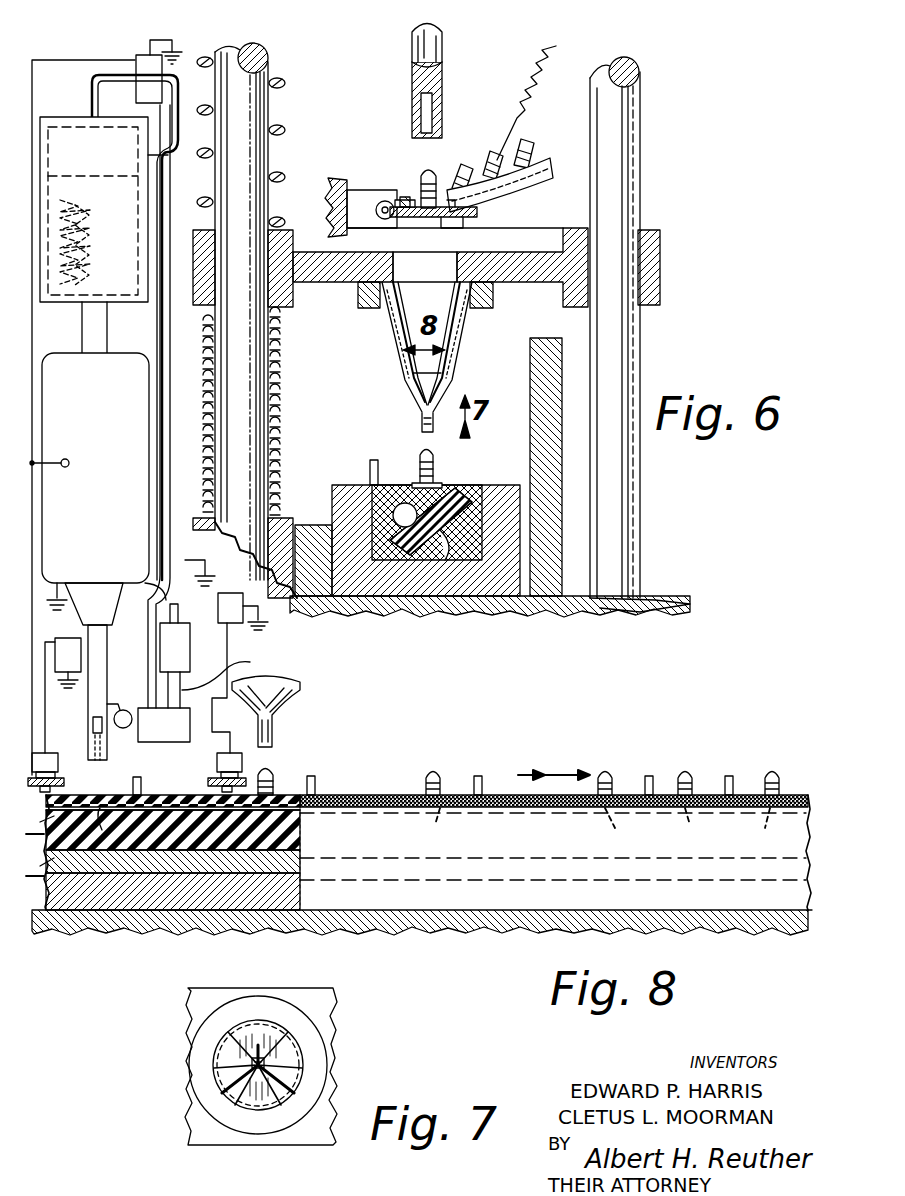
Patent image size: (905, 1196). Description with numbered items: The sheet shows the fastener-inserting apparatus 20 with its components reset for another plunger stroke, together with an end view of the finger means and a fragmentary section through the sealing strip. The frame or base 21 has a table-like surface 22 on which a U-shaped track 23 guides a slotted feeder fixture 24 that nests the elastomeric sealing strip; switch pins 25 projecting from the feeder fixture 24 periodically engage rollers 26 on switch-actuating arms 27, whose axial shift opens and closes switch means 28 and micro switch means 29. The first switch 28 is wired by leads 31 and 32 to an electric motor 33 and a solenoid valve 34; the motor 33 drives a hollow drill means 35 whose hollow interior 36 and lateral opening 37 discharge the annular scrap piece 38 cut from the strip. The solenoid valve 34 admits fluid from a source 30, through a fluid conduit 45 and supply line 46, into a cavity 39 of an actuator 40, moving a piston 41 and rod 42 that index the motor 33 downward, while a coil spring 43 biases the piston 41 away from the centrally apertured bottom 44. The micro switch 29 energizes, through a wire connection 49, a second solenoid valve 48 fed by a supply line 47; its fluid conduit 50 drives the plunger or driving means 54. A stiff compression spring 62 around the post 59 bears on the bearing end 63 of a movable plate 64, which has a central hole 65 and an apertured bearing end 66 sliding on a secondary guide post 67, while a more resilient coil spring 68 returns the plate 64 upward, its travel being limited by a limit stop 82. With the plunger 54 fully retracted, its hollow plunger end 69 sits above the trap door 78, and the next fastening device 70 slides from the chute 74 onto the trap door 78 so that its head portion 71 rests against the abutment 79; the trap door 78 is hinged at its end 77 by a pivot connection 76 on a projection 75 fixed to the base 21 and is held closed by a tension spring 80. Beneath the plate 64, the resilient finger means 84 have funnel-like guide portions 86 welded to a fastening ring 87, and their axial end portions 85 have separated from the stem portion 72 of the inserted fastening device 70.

In FIG. 6, the apparatus 20 is at (612, 338).
In FIG. 8, the apparatus 20 is at (760, 931).
In FIG. 6, the frame or base 21 is at (655, 604).
In FIG. 8, the frame or base 21 is at (700, 931).
In FIG. 6, the table-like surface 22 is at (315, 560).
In FIG. 6, the U-shaped track 23 is at (340, 546).
In FIG. 8, the U-shaped track 23 is at (262, 905).
In FIG. 6, the feeder fixture 24 is at (478, 494).
In FIG. 8, the feeder fixture 24 is at (296, 864).
In FIG. 6, the switch pins 25 is at (372, 484).
In FIG. 8, the switch pins 25 is at (316, 779).
In FIG. 6, the rollers 26 is at (62, 784).
In FIG. 6, the switch-actuating arms 27 is at (58, 778).
In FIG. 6, the switch means 28 is at (48, 754).
In FIG. 6, the micro switch means 29 is at (225, 770).
In FIG. 6, the source of fluid under pressure 30 is at (174, 745).
In FIG. 6, the lead or wire 31 is at (34, 515).
In FIG. 6, the lead or wire 32 is at (33, 82).
In FIG. 6, the electric motor 33 is at (148, 408).
In FIG. 6, the solenoid valve 34 is at (142, 54).
In FIG. 6, the drill means 35 is at (112, 640).
In FIG. 6, the hollow interior 36 is at (102, 750).
In FIG. 6, the lateral opening 37 is at (98, 710).
In FIG. 6, the annular piece of elastomeric material 38 is at (127, 706).
In FIG. 6, the space or cavity 39 is at (103, 140).
In FIG. 6, the actuator 40 is at (160, 156).
In FIG. 6, the movable piston 41 is at (128, 190).
In FIG. 6, the rod 42 is at (97, 352).
In FIG. 6, the coil spring 43 is at (60, 331).
In FIG. 6, the centrally apertured bottom 44 is at (112, 330).
In FIG. 6, the fluid conduit 45 is at (96, 73).
In FIG. 6, the supply line 46 is at (168, 464).
In FIG. 6, the fluid supply line 47 is at (222, 672).
In FIG. 6, the solenoid valve 48 is at (182, 638).
In FIG. 6, the wire connection 49 is at (252, 682).
In FIG. 6, the fluid conduit 50 is at (158, 590).
In FIG. 6, the plunger or driving means 54 is at (442, 52).
In FIG. 6, the post 59 is at (262, 42).
In FIG. 6, the compression spring means 62 is at (292, 74).
In FIG. 6, the bearing end 63 is at (290, 300).
In FIG. 6, the movable plate 64 is at (542, 250).
In FIG. 7, the movable plate 64 is at (232, 995).
In FIG. 6, the hole 65 is at (433, 270).
In FIG. 6, the apertured bearing end 66 is at (660, 258).
In FIG. 6, the secondary guide post 67 is at (628, 165).
In FIG. 6, the coil spring means 68 is at (285, 390).
In FIG. 6, the plunger end 69 is at (442, 120).
In FIG. 6, the fastening device 70 is at (488, 476).
In FIG. 8, the fastening device 70 is at (272, 772).
In FIG. 6, the head portion 71 is at (436, 218).
In FIG. 8, the head portion 71 is at (437, 810).
In FIG. 6, the stem portion 72 is at (428, 452).
In FIG. 6, the chute 74 is at (540, 180).
In FIG. 6, the projection 75 is at (352, 205).
In FIG. 6, the pivot connection 76 is at (381, 203).
In FIG. 6, the end of trap door 77 is at (386, 229).
In FIG. 6, the trap door 78 is at (460, 234).
In FIG. 6, the abutment 79 is at (405, 196).
In FIG. 6, the spring 80 is at (554, 62).
In FIG. 6, the limit stop 82 is at (548, 352).
In FIG. 6, the finger means 84 is at (393, 348).
In FIG. 7, the finger means 84 is at (225, 1058).
In FIG. 6, the axial end portions 85 is at (433, 422).
In FIG. 7, the axial end portions 85 is at (256, 1048).
In FIG. 6, the funnel-like guide portions 86 is at (458, 331).
In FIG. 7, the funnel-like guide portions 86 is at (262, 1050).
In FIG. 6, the fastening ring 87 is at (493, 298).
In FIG. 7, the fastening ring 87 is at (205, 1082).